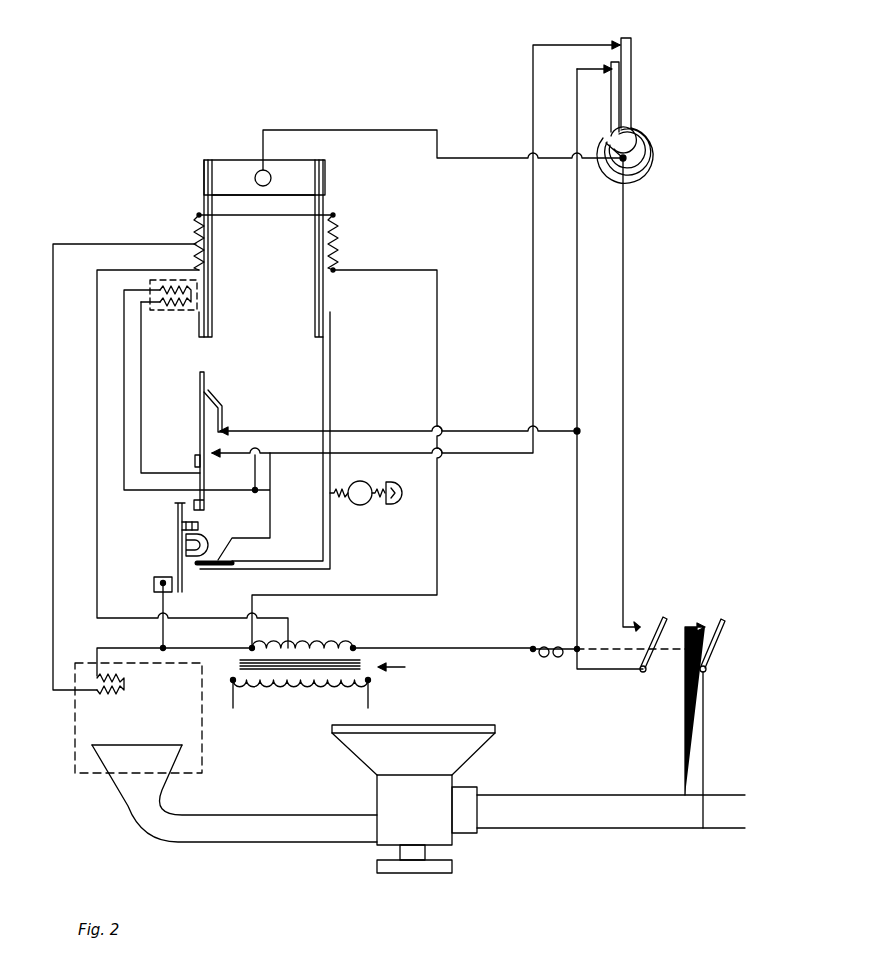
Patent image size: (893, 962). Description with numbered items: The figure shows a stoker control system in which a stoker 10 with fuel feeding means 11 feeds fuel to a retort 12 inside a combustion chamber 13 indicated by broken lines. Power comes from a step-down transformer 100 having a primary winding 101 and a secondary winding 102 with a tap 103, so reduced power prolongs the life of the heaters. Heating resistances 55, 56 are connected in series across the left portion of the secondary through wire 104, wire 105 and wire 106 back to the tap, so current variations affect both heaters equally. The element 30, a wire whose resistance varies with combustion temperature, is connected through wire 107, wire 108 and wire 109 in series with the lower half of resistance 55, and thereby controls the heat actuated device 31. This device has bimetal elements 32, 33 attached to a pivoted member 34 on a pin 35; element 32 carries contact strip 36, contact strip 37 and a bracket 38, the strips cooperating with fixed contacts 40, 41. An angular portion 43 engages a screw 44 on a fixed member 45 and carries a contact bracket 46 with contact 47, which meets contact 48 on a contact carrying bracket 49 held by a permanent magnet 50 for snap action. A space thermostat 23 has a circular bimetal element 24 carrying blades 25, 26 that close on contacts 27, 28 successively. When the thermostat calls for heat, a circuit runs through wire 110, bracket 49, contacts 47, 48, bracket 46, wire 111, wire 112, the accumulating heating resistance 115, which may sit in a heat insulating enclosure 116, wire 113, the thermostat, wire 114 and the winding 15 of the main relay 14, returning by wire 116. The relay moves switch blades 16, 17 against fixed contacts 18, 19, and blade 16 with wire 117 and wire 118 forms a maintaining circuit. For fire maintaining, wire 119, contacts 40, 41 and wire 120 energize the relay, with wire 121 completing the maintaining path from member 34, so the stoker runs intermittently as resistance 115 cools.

The stoker 10 is at (420, 818).
The fuel feeding means 11 is at (258, 814).
The retort 12 is at (134, 744).
The combustion chamber 13 is at (203, 754).
The main relay 14 is at (526, 622).
The winding 15 is at (550, 658).
The switch blade 16 is at (666, 619).
The switch blade 17 is at (722, 630).
The fixed electrical contact 18 is at (641, 622).
The fixed electrical contact 19 is at (711, 622).
The space thermostat 23 is at (658, 99).
The circular bimetal element 24 is at (650, 144).
The movable switch blade 25 is at (611, 93).
The movable switch blade 26 is at (632, 55).
The fixed electrical contact 27 is at (606, 66).
The fixed electrical contact 28 is at (622, 43).
The element 30 is at (110, 690).
The heat actuated device 31 is at (232, 134).
The bimetal element 32 is at (212, 276).
The bimetal element 33 is at (314, 252).
The pivoted member 34 is at (276, 168).
The pin 35 is at (255, 180).
The contact strip 36 is at (199, 419).
The contact strip 37 is at (216, 408).
The bracket 38 is at (204, 484).
The fixed electrical contact 40 is at (213, 450).
The fixed electrical contact 41 is at (224, 425).
The angular portion 43 is at (270, 562).
The screw 44 is at (392, 486).
The fixed member 45 is at (358, 503).
The contact bracket 46 is at (204, 554).
The contact 47 is at (198, 525).
The contact 48 is at (180, 527).
The contact carrying bracket 49 is at (177, 550).
The permanent magnet 50 is at (196, 566).
The heating resistance 55 is at (190, 221).
The heating resistance 56 is at (337, 246).
The step-down transformer 100 is at (405, 665).
The primary winding 101 is at (282, 692).
The secondary winding 102 is at (324, 645).
The tap 103 is at (290, 640).
The wire 104 is at (438, 536).
The wire 105 is at (286, 218).
The wire 106 is at (97, 544).
The wire 107 is at (192, 649).
The wire 108 is at (130, 649).
The wire 109 is at (58, 462).
The wire 110 is at (166, 604).
The wire 111 is at (272, 504).
The wire 112 is at (122, 463).
The wire 113 is at (143, 394).
The wire 114 is at (578, 290).
The heating resistance 115 is at (168, 312).
The heat insulating enclosure 116 is at (188, 322).
The wire 117 is at (624, 372).
The wire 118 is at (614, 670).
The wire 119 is at (254, 456).
The wire 120 is at (364, 428).
The wire 121 is at (478, 162).